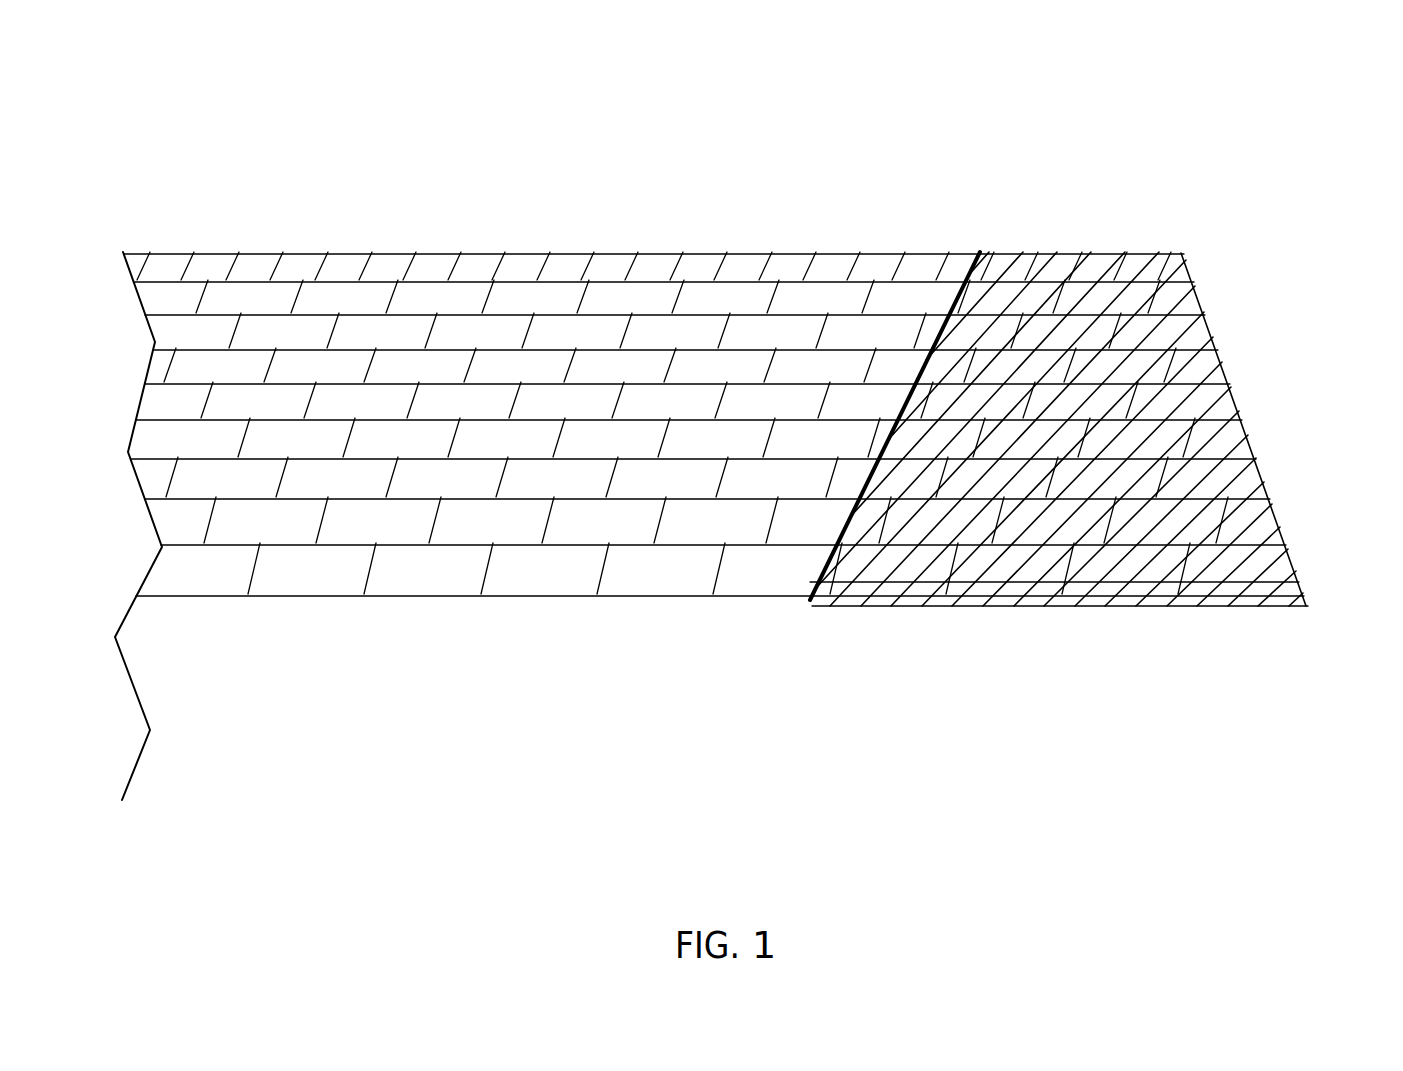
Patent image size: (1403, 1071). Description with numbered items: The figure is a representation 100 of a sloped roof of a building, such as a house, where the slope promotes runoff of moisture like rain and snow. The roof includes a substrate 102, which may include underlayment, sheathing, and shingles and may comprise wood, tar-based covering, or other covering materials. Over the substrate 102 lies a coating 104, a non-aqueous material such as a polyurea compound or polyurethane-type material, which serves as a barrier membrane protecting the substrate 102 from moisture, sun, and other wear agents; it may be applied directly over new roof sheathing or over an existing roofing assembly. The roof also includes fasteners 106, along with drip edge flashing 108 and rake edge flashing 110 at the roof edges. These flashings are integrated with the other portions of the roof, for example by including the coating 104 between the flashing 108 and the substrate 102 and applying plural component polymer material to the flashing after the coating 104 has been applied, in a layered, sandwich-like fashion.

The representation of a sloped roof 100 is at (348, 212).
The substrate 102 is at (383, 333).
The coating 104 is at (1104, 385).
The fasteners 106 is at (1197, 587).
The drip edge flashing 108 is at (1163, 593).
The rake edge flashing 110 is at (1203, 313).